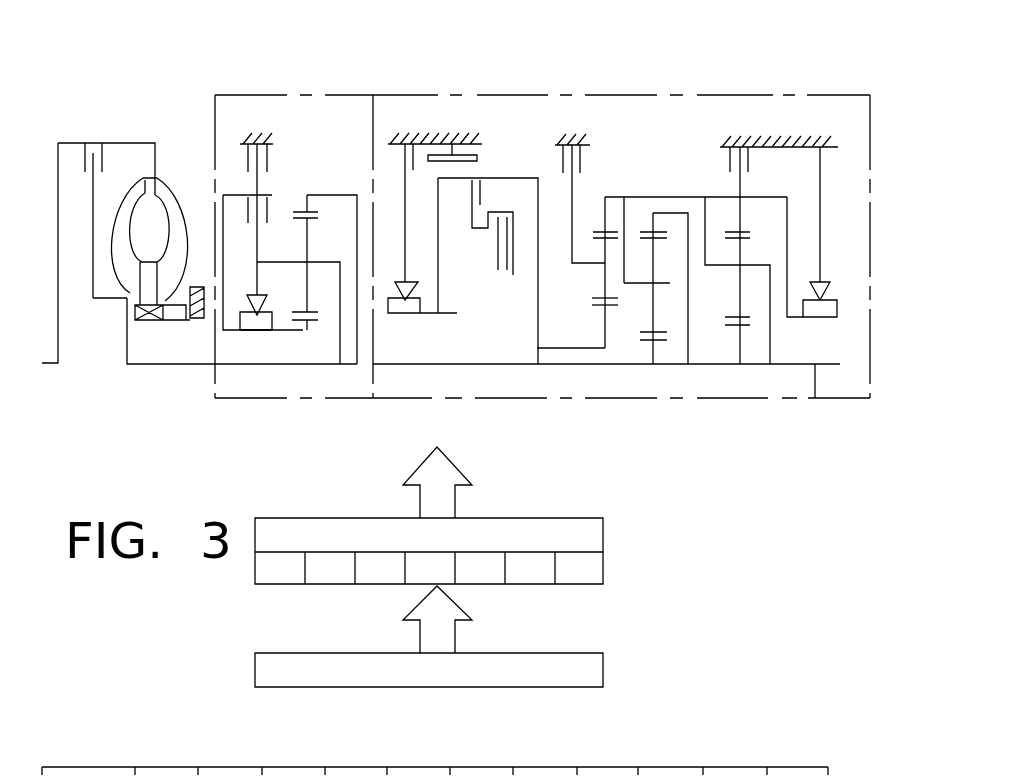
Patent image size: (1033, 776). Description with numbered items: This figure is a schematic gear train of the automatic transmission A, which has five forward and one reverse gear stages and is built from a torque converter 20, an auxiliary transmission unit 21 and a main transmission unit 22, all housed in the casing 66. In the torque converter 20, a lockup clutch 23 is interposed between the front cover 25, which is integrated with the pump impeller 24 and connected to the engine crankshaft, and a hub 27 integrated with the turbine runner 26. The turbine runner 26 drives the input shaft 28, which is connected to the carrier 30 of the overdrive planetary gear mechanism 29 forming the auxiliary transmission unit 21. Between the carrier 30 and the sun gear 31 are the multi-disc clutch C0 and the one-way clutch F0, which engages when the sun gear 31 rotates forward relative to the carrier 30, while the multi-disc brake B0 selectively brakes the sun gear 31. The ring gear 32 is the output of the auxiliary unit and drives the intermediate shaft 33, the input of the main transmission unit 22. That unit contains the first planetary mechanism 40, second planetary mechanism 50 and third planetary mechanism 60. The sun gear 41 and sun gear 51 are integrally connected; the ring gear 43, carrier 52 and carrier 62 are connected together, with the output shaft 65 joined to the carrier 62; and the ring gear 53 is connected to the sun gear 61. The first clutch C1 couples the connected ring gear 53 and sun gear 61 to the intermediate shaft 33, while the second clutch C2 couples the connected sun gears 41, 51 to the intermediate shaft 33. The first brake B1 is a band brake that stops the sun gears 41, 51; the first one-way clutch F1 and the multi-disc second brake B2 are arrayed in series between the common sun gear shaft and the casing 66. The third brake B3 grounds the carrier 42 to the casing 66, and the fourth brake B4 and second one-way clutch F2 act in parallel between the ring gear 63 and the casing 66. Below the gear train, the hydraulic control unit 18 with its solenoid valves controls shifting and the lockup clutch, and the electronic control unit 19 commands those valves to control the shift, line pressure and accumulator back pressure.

The hydraulic control unit 18 is at (603, 538).
The automatic transmission electronic control unit 19 is at (595, 670).
The torque converter 20 is at (163, 117).
The auxiliary transmission unit 21 is at (357, 400).
The main transmission unit 22 is at (612, 95).
The lockup clutch 23 is at (83, 143).
The pump impeller 24 is at (160, 313).
The front cover 25 is at (60, 168).
The turbine runner 26 is at (142, 178).
The hub 27 is at (115, 300).
The input shaft 28 is at (147, 365).
The overdrive planetary gear mechanism 29 is at (275, 340).
The carrier 30 is at (318, 260).
The sun gear 31 is at (312, 325).
The ring gear 32 is at (297, 207).
The intermediate shaft 33 is at (415, 366).
The first planetary mechanism 40 is at (587, 362).
The sun gear 41 is at (593, 312).
The carrier 42 is at (595, 272).
The ring gear 43 is at (615, 230).
The second planetary mechanism 50 is at (657, 365).
The sun gear 51 is at (640, 342).
The carrier 52 is at (640, 283).
The ring gear 53 is at (650, 228).
The third planetary mechanism 60 is at (751, 365).
The sun gear 61 is at (733, 328).
The carrier 62 is at (758, 263).
The ring gear 63 is at (737, 230).
The output shaft 65 is at (813, 400).
The casing 66 is at (427, 142).
The automatic transmission A is at (527, 67).
The multi-disc brake B0 is at (245, 155).
The first brake B1 is at (457, 152).
The second brake B2 is at (400, 157).
The third brake B3 is at (563, 170).
The fourth brake B4 is at (772, 147).
The multi-disc clutch C0 is at (247, 207).
The first clutch C1 is at (515, 228).
The second clutch C2 is at (465, 195).
The one-way clutch F0 is at (250, 332).
The first one-way clutch F1 is at (412, 305).
The second one-way clutch F2 is at (836, 302).